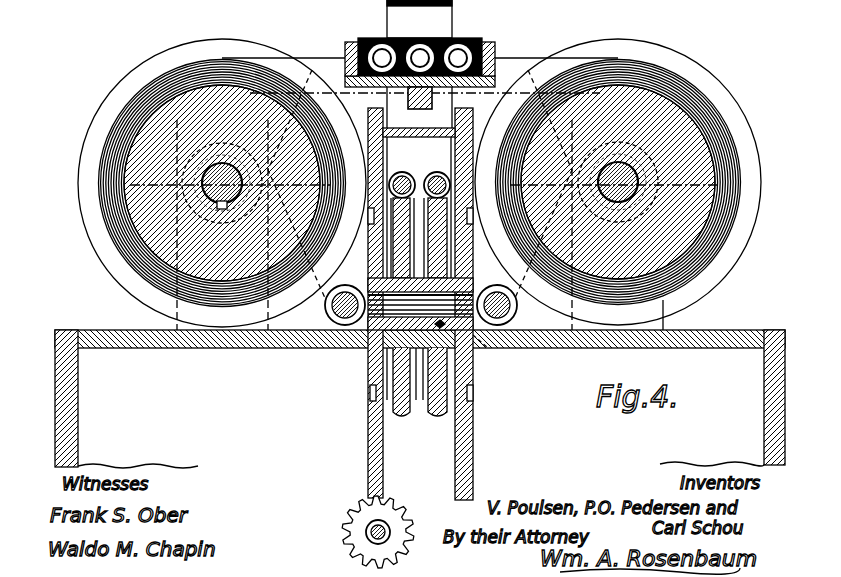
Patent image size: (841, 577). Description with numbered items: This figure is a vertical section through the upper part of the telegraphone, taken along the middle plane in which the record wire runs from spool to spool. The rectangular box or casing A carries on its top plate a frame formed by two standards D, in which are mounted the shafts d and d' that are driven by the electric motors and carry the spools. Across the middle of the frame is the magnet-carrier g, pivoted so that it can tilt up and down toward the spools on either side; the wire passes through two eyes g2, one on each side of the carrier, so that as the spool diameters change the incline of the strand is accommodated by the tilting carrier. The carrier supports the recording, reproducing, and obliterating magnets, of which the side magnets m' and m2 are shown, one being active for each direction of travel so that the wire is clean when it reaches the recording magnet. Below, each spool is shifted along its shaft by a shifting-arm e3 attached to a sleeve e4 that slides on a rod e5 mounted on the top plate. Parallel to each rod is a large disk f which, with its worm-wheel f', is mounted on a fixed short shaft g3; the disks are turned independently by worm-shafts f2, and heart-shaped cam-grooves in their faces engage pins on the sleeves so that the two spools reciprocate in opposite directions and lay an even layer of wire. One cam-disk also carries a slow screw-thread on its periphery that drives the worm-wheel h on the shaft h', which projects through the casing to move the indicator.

The shaft d' is at (207, 184).
The shaft d is at (629, 184).
The magnet-carrier g is at (482, 86).
The eyes g2 is at (340, 88).
The fixed short shaft g3 is at (482, 348).
The obliterating magnet m2 is at (380, 44).
The obliterating magnet m' is at (445, 39).
The disk f is at (418, 304).
The worm-wheel f' is at (417, 324).
The worm-shaft f2 is at (419, 171).
The shifting-arm e3 is at (360, 290).
The sleeve e4 is at (345, 326).
The rod e5 is at (322, 348).
The worm-wheel h is at (372, 529).
The shaft h' is at (396, 513).
The standards D is at (668, 330).
The box or casing A is at (421, 418).